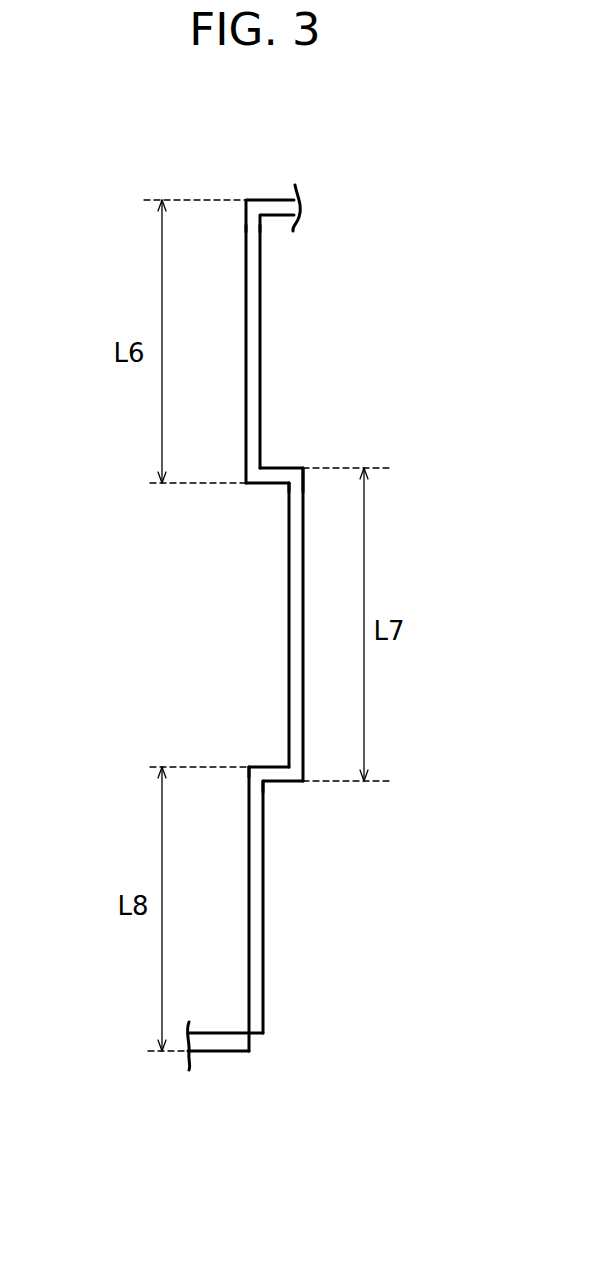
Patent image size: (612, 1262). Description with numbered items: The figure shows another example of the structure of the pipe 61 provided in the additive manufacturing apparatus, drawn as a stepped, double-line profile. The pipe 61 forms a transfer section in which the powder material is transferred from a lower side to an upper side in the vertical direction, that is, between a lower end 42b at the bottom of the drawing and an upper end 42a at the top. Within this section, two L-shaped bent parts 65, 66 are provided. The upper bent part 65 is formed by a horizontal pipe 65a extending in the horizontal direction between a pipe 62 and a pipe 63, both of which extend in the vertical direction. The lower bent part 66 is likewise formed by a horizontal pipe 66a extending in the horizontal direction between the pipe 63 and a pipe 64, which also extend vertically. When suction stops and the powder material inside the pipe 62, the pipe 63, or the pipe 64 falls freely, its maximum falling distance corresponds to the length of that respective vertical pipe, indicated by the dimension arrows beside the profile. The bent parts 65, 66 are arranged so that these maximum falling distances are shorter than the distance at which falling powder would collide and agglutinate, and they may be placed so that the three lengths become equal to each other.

The pipe 61 is at (325, 176).
The upper end 42a is at (263, 199).
The lower end 42b is at (235, 1051).
The pipe 62 is at (260, 335).
The pipe 63 is at (289, 628).
The pipe 64 is at (264, 922).
The bent part 65 is at (327, 462).
The horizontal pipe 65a is at (265, 483).
The bent part 66 is at (304, 803).
The horizontal pipe 66a is at (267, 767).